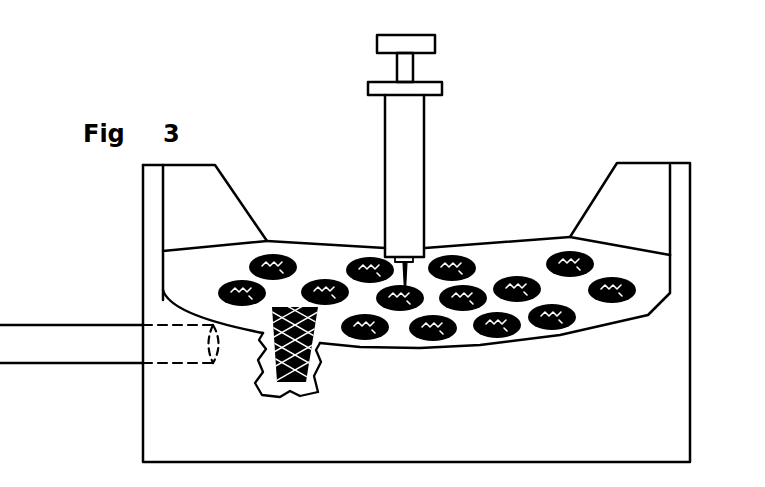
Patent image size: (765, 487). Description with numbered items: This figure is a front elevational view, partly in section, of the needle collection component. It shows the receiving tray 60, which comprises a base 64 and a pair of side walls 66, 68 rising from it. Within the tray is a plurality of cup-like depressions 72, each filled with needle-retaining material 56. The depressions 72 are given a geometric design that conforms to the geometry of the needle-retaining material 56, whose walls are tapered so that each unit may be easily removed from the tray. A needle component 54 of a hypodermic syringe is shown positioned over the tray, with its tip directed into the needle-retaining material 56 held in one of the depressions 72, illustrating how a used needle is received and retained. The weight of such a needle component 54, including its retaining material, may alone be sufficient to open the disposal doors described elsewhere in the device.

The needle component 54 is at (393, 256).
The needle-retaining material 56 is at (297, 304).
The receiving tray 60 is at (140, 233).
The base 64 is at (183, 433).
The side wall 66 is at (143, 390).
The side wall 68 is at (693, 178).
The cup-like depressions 72 is at (516, 276).